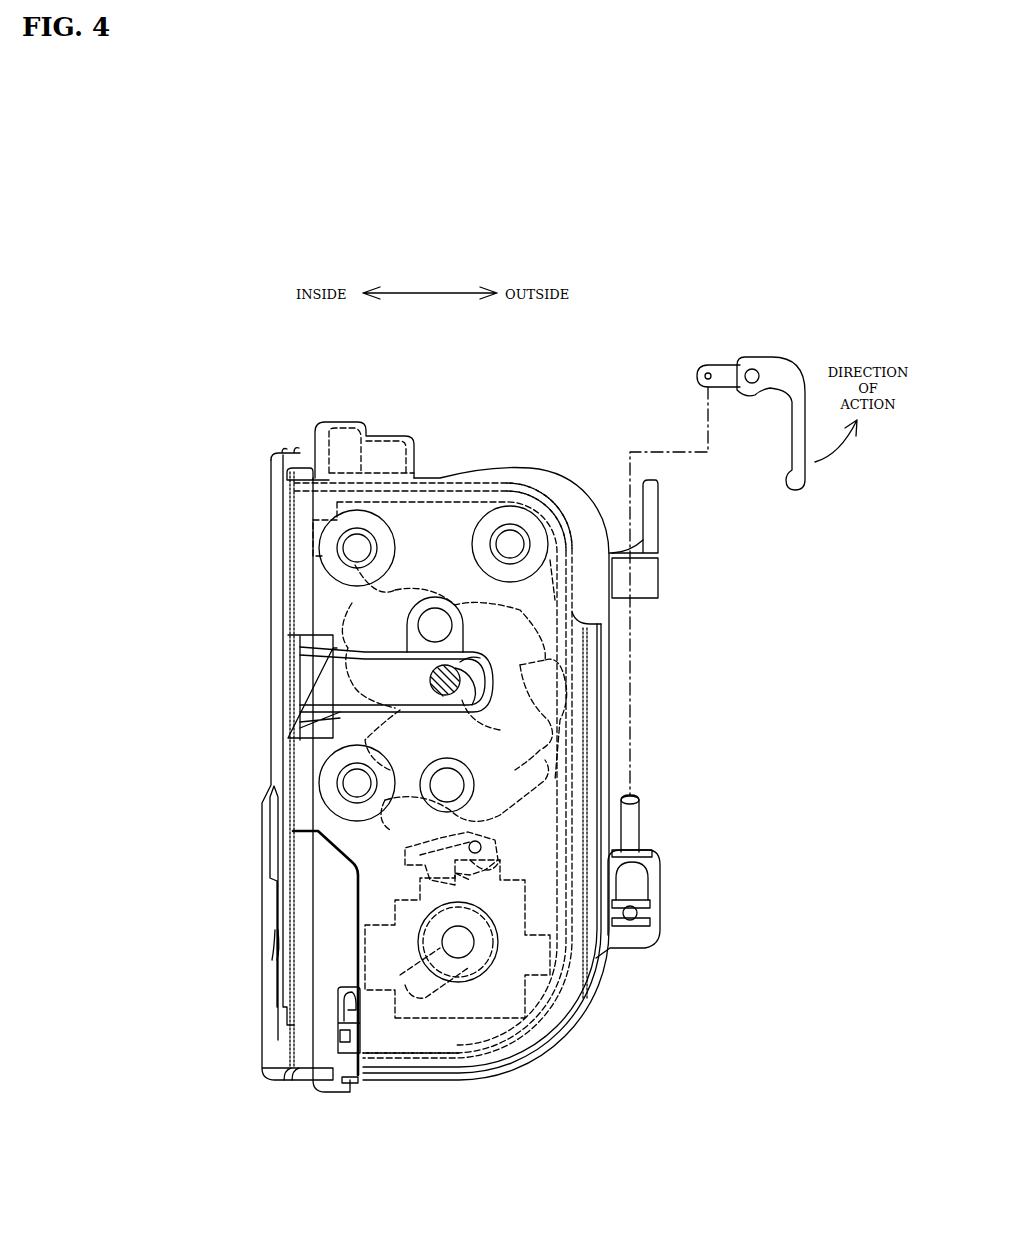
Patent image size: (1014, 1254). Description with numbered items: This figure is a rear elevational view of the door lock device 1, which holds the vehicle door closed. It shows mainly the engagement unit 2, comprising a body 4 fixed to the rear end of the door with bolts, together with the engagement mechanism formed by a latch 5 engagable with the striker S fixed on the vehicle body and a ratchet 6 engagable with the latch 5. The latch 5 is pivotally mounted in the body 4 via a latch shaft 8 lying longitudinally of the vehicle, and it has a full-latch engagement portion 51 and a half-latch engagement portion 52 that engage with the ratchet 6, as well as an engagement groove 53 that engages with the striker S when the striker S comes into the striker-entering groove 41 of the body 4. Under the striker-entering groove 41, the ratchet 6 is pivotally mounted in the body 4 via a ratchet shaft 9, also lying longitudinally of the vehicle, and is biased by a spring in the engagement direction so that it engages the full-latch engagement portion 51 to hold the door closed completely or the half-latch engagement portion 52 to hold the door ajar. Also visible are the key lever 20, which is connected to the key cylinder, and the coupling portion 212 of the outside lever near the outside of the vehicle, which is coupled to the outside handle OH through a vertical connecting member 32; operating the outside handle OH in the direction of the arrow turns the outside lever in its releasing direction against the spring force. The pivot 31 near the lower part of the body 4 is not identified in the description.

The door lock device 1 is at (574, 398).
The engagement unit 2 is at (248, 772).
The body 4 is at (277, 915).
The latch 5 is at (428, 550).
The ratchet 6 is at (533, 800).
The latch shaft 8 is at (440, 607).
The ratchet shaft 9 is at (380, 823).
The key lever 20 is at (668, 518).
The outside lever pivot 31 is at (470, 945).
The vertical connecting member 32 is at (640, 834).
The striker-entering groove 41 is at (337, 712).
The full-latch engagement portion 51 is at (545, 780).
The half-latch engagement portion 52 is at (555, 507).
The engagement groove 53 is at (337, 702).
The coupling portion 212 is at (660, 885).
The outside handle OH is at (800, 366).
The striker S is at (492, 684).